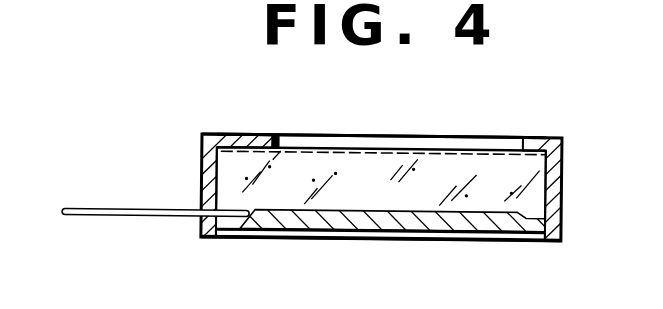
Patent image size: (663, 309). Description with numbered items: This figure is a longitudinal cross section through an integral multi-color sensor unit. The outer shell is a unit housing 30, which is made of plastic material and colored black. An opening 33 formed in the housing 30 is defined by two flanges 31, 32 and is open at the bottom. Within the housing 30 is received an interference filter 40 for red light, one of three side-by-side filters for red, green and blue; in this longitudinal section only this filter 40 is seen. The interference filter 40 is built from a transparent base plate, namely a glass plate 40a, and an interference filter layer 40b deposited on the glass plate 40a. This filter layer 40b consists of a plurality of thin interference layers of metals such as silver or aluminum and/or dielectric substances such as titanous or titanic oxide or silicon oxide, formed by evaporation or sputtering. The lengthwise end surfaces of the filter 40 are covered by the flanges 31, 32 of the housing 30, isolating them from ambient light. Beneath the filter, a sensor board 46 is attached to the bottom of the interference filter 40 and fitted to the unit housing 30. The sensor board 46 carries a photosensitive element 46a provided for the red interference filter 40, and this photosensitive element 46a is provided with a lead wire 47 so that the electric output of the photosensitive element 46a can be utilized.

The unit housing 30 is at (563, 190).
The flange 31 is at (538, 140).
The flange 32 is at (243, 142).
The opening 33 is at (279, 143).
The red interference filter 40 is at (404, 128).
The glass plate 40a is at (493, 170).
The interference filter layer 40b is at (443, 152).
The sensor board 46 is at (420, 233).
The photosensitive element 46a is at (353, 210).
The lead wire 47 is at (144, 217).